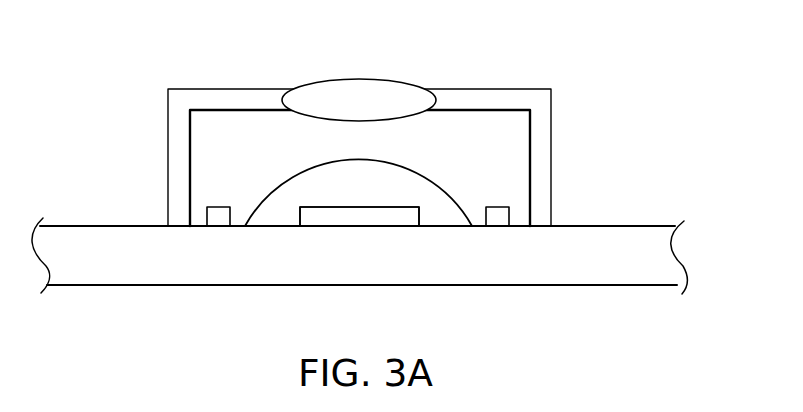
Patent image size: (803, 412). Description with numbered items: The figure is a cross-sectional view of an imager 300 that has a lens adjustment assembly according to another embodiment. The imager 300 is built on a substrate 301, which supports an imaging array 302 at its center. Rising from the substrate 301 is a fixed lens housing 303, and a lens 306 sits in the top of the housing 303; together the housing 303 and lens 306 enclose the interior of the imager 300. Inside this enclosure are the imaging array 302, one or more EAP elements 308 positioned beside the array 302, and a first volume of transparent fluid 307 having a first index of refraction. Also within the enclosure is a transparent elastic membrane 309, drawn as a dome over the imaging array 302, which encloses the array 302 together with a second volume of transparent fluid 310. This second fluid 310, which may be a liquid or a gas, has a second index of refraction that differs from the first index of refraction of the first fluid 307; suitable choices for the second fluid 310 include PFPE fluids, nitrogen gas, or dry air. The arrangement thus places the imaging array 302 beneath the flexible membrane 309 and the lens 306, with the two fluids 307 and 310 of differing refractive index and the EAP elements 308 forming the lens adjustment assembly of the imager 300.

The imager 300 is at (91, 77).
The substrate 301 is at (640, 271).
The imaging array 302 is at (329, 219).
The fixed lens housing 303 is at (178, 160).
The lens 306 is at (375, 109).
The first volume of transparent fluid 307 is at (248, 191).
The EAP element 308 is at (499, 219).
The transparent elastic membrane 309 is at (434, 170).
The second volume of transparent fluid 310 is at (328, 196).